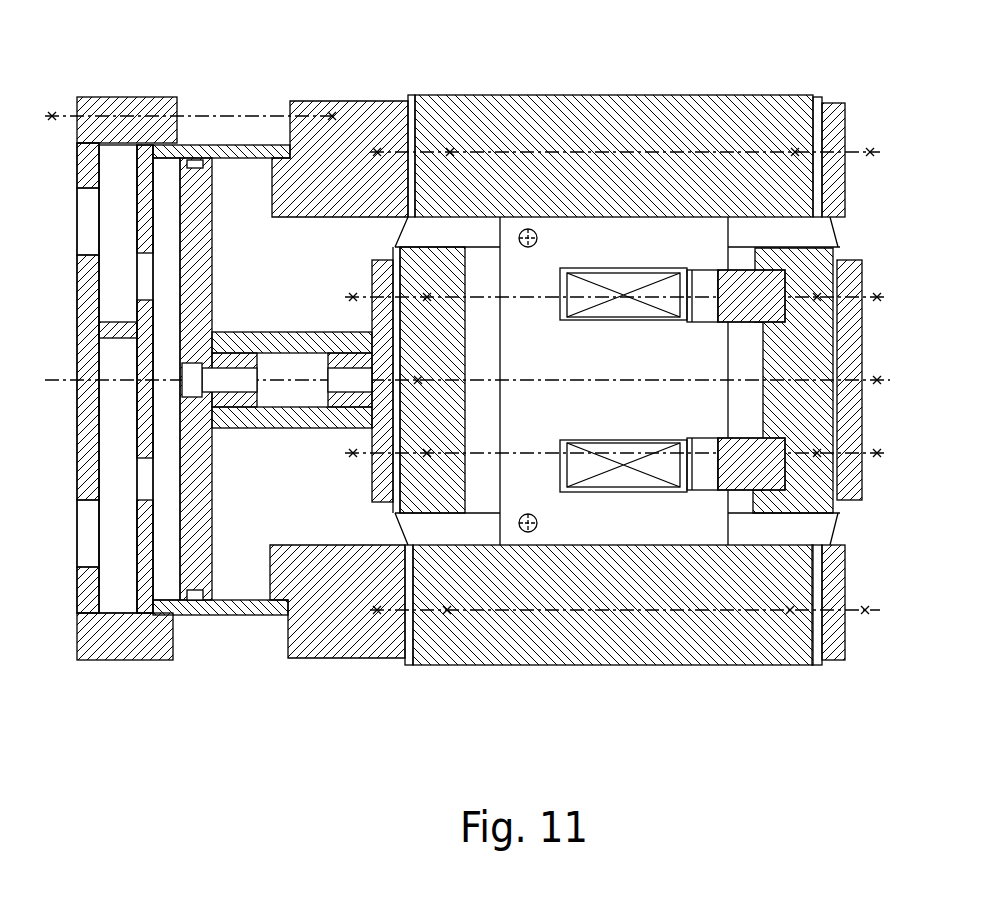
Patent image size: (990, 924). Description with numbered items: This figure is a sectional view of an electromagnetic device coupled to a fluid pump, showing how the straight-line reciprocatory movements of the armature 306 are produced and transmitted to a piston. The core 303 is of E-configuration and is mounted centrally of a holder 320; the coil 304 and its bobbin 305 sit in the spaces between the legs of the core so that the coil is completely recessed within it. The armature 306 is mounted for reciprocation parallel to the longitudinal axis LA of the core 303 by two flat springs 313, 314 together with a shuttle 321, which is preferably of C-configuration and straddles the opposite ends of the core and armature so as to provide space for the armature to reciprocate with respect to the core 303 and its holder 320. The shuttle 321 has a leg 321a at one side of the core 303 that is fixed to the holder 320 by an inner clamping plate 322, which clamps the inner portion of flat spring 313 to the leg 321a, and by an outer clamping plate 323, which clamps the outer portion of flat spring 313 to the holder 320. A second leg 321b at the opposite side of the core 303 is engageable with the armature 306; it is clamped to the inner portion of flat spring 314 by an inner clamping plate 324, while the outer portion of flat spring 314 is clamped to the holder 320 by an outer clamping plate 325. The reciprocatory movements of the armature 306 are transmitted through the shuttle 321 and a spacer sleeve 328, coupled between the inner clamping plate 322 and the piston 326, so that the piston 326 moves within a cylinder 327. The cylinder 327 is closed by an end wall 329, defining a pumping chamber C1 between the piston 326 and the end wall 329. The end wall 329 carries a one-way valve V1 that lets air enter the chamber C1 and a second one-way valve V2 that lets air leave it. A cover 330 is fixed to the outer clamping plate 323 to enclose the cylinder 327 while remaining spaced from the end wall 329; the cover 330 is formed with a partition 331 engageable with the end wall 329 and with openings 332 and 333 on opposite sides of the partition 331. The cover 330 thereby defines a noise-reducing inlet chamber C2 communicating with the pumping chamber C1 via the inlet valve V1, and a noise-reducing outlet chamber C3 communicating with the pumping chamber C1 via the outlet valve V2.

The core 303 is at (627, 380).
The coil 304 is at (640, 275).
The bobbin 305 is at (640, 322).
The armature 306 is at (820, 277).
The flat spring 313 is at (395, 228).
The flat spring 314 is at (838, 232).
The holder 320 is at (615, 95).
The shuttle 321 is at (482, 288).
The leg 321a is at (451, 236).
The second leg 321b is at (817, 487).
The inner clamping plate 322 is at (372, 280).
The outer clamping plate 323 is at (370, 101).
The inner clamping plate 324 is at (852, 345).
The outer clamping plate 325 is at (848, 103).
The piston 326 is at (232, 150).
The cylinder 327 is at (250, 147).
The spacer sleeve 328 is at (236, 332).
The end wall 329 is at (108, 150).
The cover 330 is at (86, 305).
The partition 331 is at (115, 338).
The opening 332 is at (78, 545).
The opening 333 is at (78, 225).
The longitudinal axis LA is at (553, 390).
The chamber C1 is at (167, 558).
The inlet chamber C2 is at (132, 436).
The outlet chamber C3 is at (132, 316).
The one-way valve V1 is at (118, 525).
The one-way valve V2 is at (118, 233).